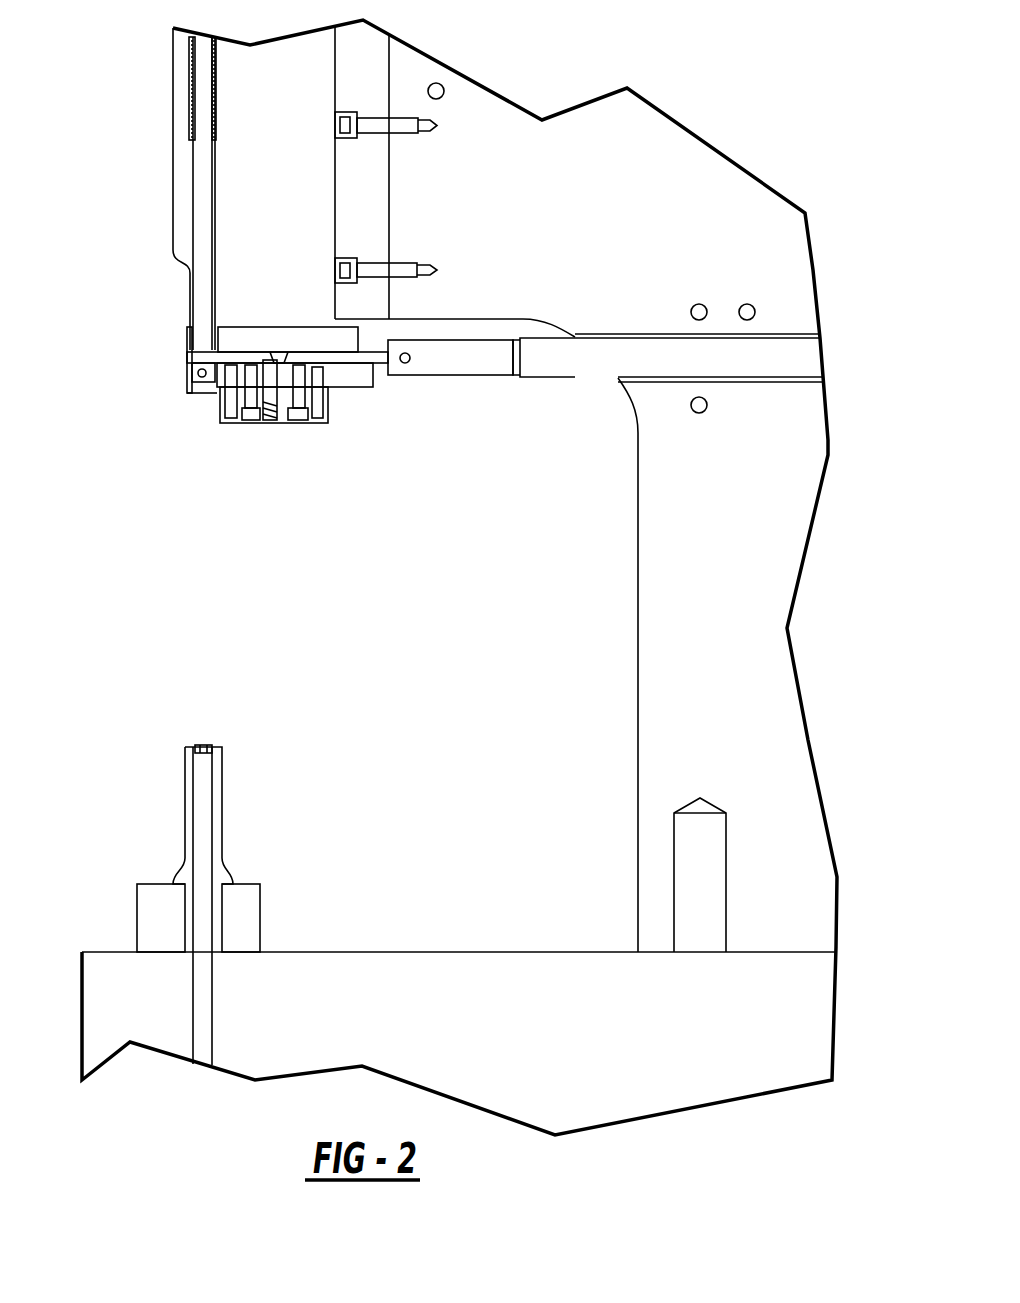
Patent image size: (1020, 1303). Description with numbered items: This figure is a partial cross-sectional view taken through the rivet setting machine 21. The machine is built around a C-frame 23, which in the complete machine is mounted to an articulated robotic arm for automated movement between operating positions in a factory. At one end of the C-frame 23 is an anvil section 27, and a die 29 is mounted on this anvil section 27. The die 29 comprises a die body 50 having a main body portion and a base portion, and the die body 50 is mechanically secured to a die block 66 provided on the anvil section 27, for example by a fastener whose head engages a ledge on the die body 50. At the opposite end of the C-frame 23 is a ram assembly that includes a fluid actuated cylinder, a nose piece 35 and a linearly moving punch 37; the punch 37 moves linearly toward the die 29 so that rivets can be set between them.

The rivet setting machine 21 is at (752, 135).
The C-frame 23 is at (727, 612).
The anvil section 27 is at (377, 970).
The die 29 is at (222, 802).
The nose piece 35 is at (213, 358).
The punch 37 is at (203, 215).
The die body 50 is at (185, 776).
The die block 66 is at (137, 913).